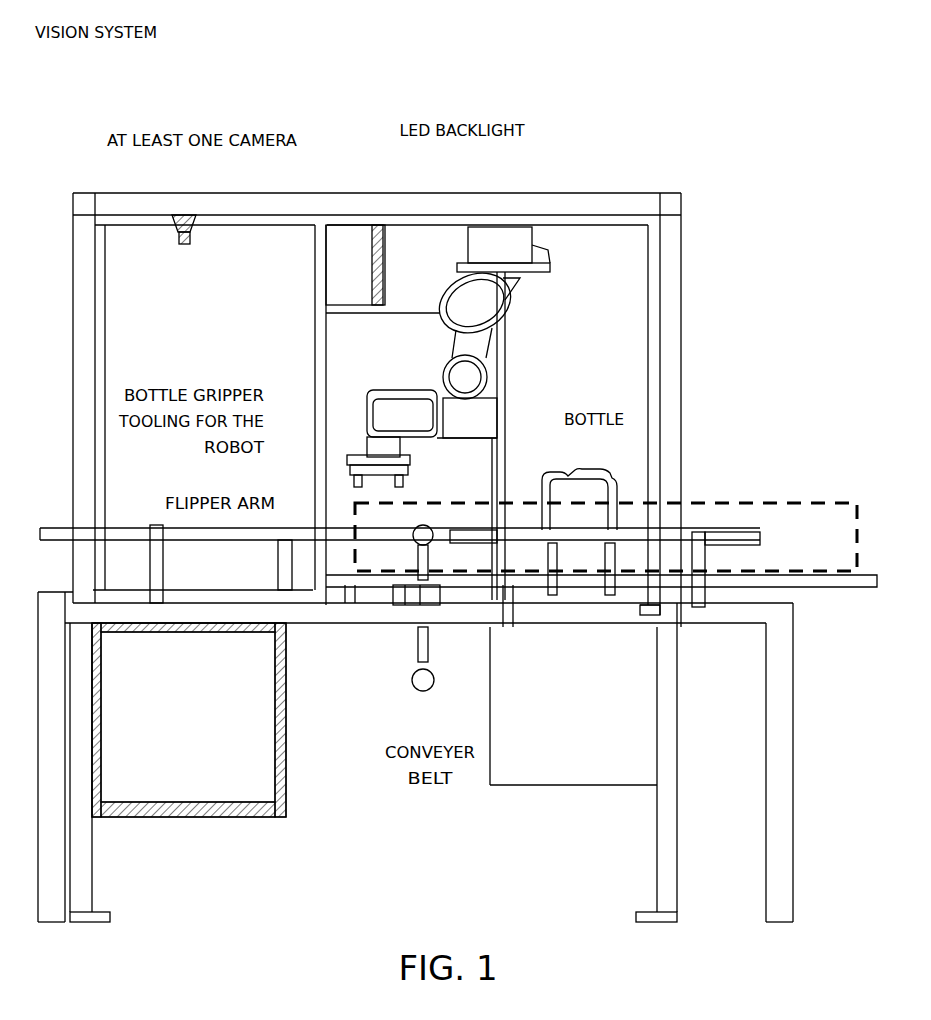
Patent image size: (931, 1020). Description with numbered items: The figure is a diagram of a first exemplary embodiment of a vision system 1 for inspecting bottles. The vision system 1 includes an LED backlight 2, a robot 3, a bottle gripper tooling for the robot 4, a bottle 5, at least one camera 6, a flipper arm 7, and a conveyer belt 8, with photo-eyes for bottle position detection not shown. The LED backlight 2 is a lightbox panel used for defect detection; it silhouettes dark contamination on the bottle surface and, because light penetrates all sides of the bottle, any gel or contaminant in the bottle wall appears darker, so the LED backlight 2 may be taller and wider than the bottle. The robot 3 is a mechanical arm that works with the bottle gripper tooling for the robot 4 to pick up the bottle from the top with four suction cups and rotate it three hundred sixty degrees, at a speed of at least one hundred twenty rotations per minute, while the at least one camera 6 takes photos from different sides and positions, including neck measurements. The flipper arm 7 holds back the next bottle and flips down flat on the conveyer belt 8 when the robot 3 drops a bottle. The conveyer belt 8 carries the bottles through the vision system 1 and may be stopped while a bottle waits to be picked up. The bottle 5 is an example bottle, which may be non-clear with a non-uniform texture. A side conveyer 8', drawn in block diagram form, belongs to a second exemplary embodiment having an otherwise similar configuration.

The vision system 1 is at (118, 96).
The LED backlight 2 is at (388, 338).
The robot 3 is at (480, 416).
The bottle gripper tooling for the robot 4 is at (380, 470).
The bottle 5 is at (575, 510).
The at least one camera 6 is at (185, 220).
The flipper arm 7 is at (423, 574).
The conveyer belt 8 is at (458, 629).
The side conveyer 8' is at (606, 493).